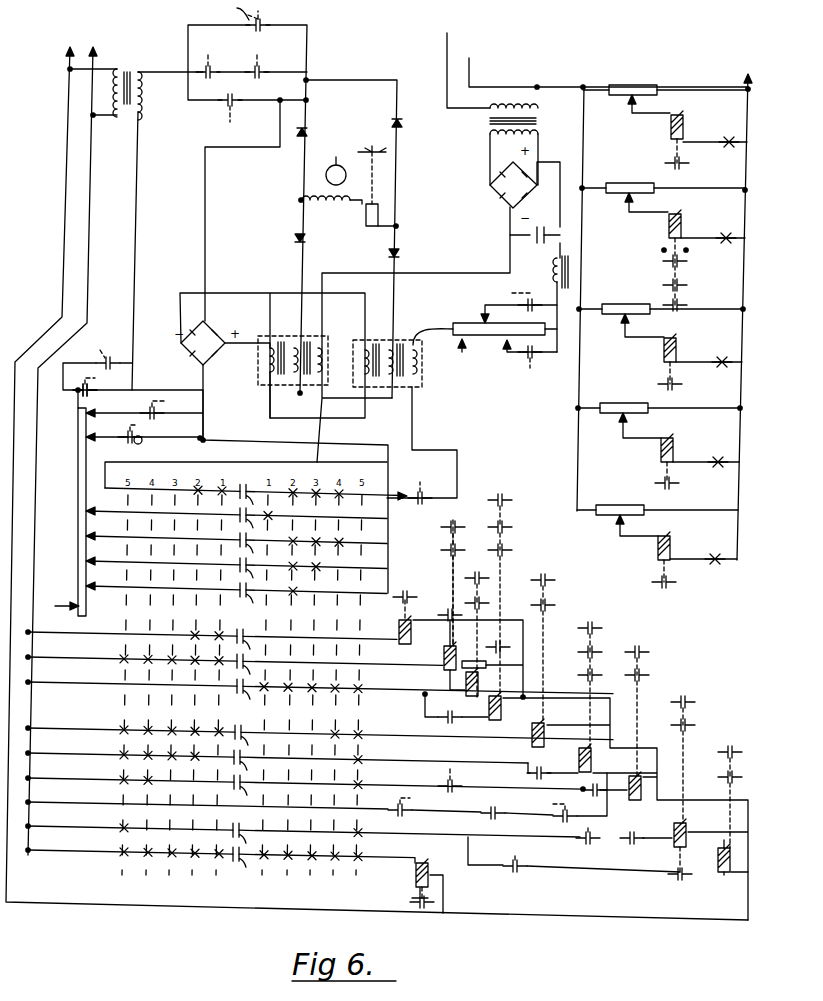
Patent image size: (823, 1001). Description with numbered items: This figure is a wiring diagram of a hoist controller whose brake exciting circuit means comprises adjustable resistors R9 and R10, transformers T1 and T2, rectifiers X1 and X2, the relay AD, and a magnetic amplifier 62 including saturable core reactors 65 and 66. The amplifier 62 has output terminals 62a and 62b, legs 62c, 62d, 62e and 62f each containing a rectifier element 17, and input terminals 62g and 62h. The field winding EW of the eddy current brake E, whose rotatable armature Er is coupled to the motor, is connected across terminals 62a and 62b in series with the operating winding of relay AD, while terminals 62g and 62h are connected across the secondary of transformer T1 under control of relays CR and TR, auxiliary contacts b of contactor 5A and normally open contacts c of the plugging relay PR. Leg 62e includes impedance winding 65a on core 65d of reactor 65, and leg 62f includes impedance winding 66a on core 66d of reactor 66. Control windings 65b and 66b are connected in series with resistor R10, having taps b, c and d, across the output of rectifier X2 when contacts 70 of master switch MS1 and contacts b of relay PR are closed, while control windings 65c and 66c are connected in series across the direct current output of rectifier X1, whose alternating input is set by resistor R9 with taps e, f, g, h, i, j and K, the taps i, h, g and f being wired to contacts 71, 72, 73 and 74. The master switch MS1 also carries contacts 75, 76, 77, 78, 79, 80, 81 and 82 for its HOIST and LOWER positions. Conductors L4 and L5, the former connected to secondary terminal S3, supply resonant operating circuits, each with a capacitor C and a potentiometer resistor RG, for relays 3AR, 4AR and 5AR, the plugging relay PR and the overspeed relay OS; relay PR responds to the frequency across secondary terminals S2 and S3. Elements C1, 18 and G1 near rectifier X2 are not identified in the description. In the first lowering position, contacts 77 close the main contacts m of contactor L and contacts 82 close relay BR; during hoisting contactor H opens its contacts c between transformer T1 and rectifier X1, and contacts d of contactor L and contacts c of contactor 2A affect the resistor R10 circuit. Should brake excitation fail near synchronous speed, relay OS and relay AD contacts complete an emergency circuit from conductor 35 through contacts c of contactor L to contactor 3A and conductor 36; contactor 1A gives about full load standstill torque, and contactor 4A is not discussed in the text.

The conductor 36 is at (64, 165).
The conductor 35 is at (94, 182).
The transformer T1 is at (124, 120).
The contactor 5A is at (208, 54).
The relay TR is at (257, 60).
The plugging relay PR is at (269, 20).
The capacitor C is at (711, 561).
The relay CR is at (236, 122).
The input terminal 62g is at (310, 78).
The leg 62c is at (308, 120).
The leg 62d is at (398, 150).
The output terminal 62b is at (398, 228).
The output terminal 62a is at (300, 200).
The leg 62e is at (297, 264).
The leg 62f is at (396, 260).
The magnetic amplifier 62 is at (352, 258).
The rectifier element 17 is at (300, 136).
The rotatable armature Er is at (354, 175).
The eddy current brake E is at (282, 184).
The field winding EW is at (331, 211).
The relay AD is at (366, 216).
The rectifier X1 is at (184, 358).
The saturable core reactor 65 is at (249, 378).
The impedance winding 65a is at (294, 346).
The control winding 65b is at (320, 346).
The control winding 65c is at (269, 342).
The core 65d is at (320, 374).
The input terminal 62h is at (289, 411).
The saturable core reactor 66 is at (431, 388).
The impedance winding 66a is at (388, 346).
The control winding 66b is at (423, 322).
The control winding 66c is at (364, 348).
The core 66d is at (413, 385).
The secondary terminal S2 is at (447, 34).
The secondary terminal S3 is at (469, 60).
The transformer T2 is at (540, 128).
The rectifier X2 is at (490, 192).
The capacitor C1 is at (541, 233).
The generator circuit G1 is at (468, 250).
The inductor 18 is at (546, 262).
The conductor L4 is at (583, 150).
The conductor L5 is at (748, 174).
The potentiometer resistor RG is at (622, 72).
The overspeed relay OS is at (669, 130).
The resistor tap e is at (661, 250).
The auxiliary contacts b is at (458, 724).
The auxiliary contacts c is at (662, 284).
The auxiliary contacts d is at (110, 360).
The adjustable resistor R10 is at (463, 315).
The contactor L is at (508, 710).
The contactor 2A is at (530, 370).
The relay 3AR is at (665, 351).
The relay 4AR is at (663, 451).
The relay 5AR is at (660, 549).
The contactor H is at (446, 658).
The adjustable resistor R9 is at (77, 500).
The resistor tap K is at (90, 416).
The resistor tap j is at (88, 440).
The resistor tap i is at (88, 513).
The resistor tap h is at (90, 538).
The resistor tap g is at (88, 563).
The resistor tap f is at (88, 588).
The hoist positions HOIST is at (162, 469).
The lower positions LOWER is at (314, 474).
The master switch contacts 70 is at (256, 497).
The master switch contacts 71 is at (237, 522).
The master switch contacts 72 is at (237, 547).
The master switch contacts 73 is at (237, 572).
The master switch contacts 74 is at (237, 597).
The master switch contacts 75 is at (211, 642).
The master switch contacts 76 is at (234, 667).
The master switch contacts 77 is at (319, 693).
The master switch contacts 78 is at (319, 739).
The master switch contacts 79 is at (277, 764).
The master switch contacts 80 is at (305, 789).
The master switch contacts 81 is at (303, 837).
The master switch contacts 82 is at (220, 862).
The master switch MS1 is at (100, 714).
The contactor 1A is at (546, 736).
The contactor 3A is at (641, 788).
The accelerating relay 4A is at (688, 836).
The relay BR is at (430, 876).
The main contacts m is at (448, 544).